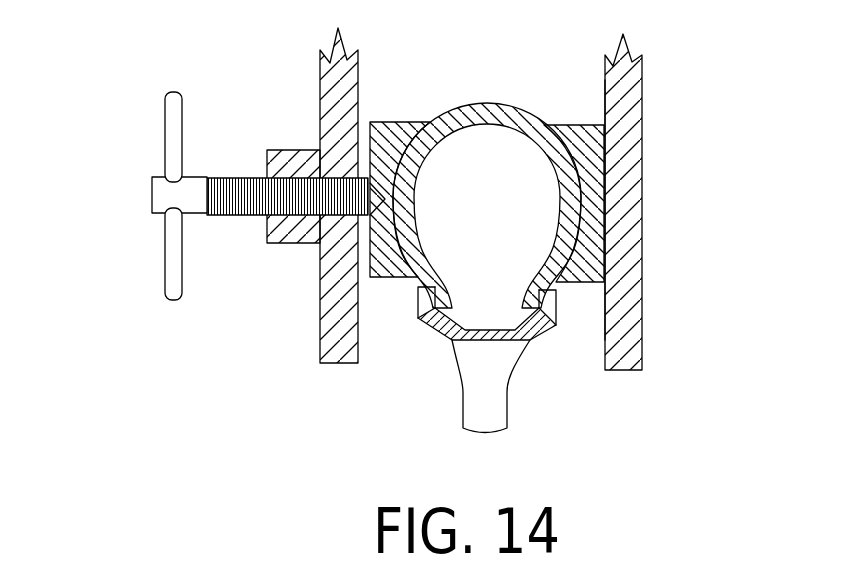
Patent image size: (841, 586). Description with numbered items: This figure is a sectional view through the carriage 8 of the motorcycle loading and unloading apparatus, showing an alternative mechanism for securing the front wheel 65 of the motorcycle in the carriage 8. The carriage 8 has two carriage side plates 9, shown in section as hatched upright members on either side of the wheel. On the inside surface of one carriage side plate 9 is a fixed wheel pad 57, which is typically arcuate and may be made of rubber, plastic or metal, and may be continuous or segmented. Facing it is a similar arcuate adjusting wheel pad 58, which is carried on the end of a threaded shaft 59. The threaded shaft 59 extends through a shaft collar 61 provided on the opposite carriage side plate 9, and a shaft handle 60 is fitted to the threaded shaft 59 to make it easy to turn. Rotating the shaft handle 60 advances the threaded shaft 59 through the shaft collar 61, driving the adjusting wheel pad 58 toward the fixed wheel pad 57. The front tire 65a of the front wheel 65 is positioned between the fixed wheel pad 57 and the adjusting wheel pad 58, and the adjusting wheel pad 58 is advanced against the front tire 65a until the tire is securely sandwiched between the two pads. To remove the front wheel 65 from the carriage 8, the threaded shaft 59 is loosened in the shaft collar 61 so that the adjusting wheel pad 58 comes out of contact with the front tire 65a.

The carriage 8 is at (647, 100).
The carriage side plates 9 is at (330, 80).
The fixed wheel pad 57 is at (578, 133).
The adjusting wheel pad 58 is at (407, 123).
The threaded shaft 59 is at (195, 208).
The shaft handle 60 is at (175, 112).
The shaft collar 61 is at (283, 157).
The front wheel 65 is at (463, 393).
The front tire 65a is at (507, 107).